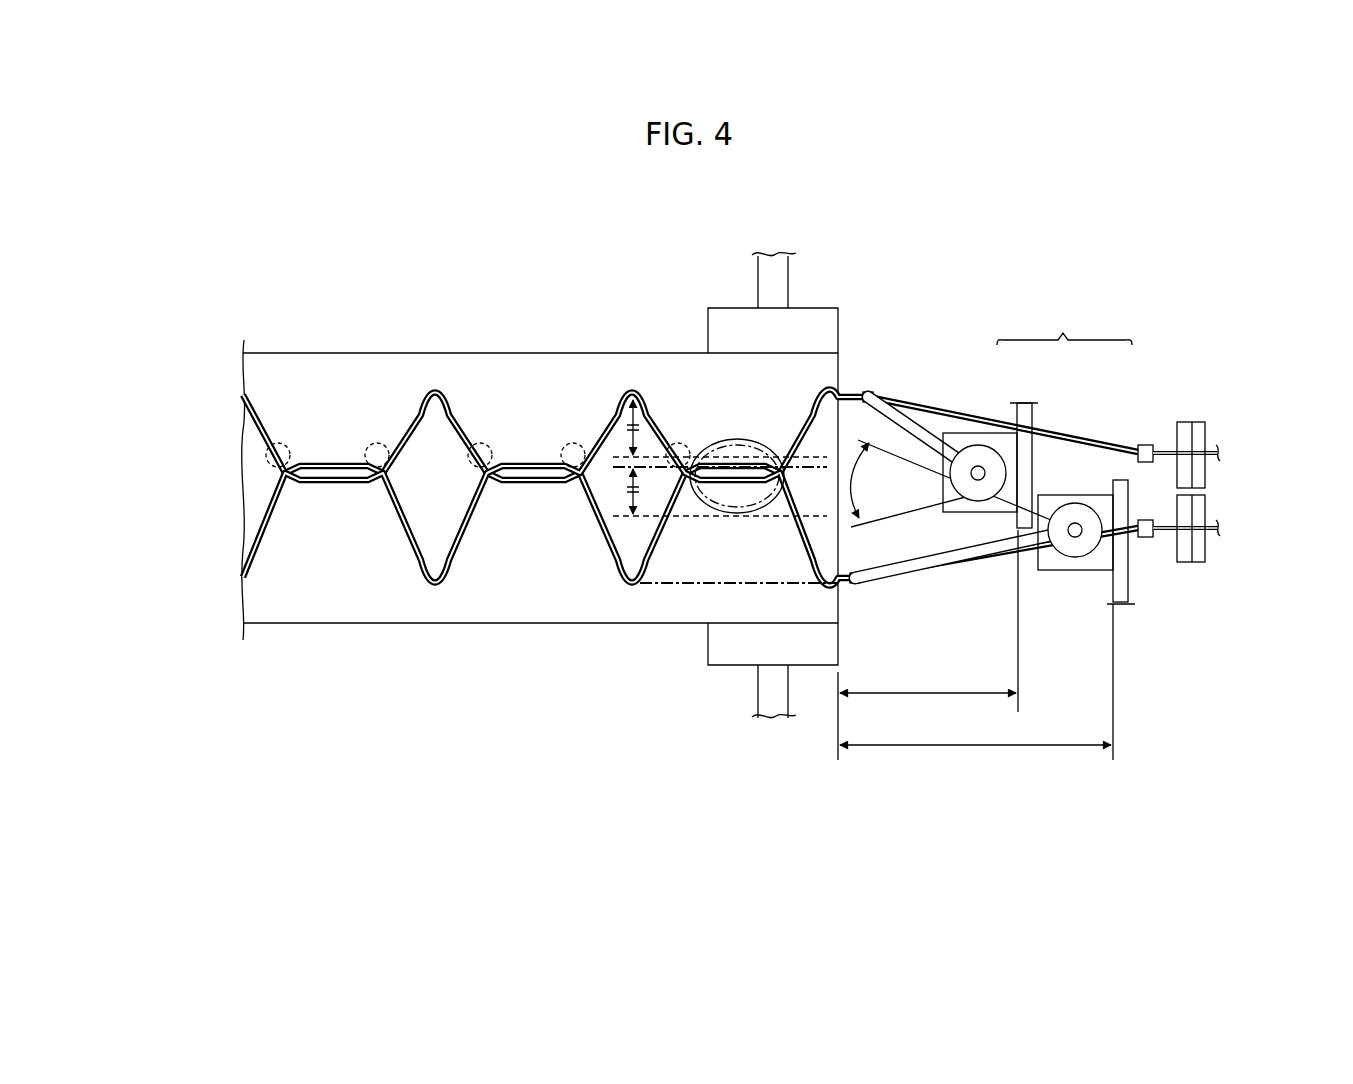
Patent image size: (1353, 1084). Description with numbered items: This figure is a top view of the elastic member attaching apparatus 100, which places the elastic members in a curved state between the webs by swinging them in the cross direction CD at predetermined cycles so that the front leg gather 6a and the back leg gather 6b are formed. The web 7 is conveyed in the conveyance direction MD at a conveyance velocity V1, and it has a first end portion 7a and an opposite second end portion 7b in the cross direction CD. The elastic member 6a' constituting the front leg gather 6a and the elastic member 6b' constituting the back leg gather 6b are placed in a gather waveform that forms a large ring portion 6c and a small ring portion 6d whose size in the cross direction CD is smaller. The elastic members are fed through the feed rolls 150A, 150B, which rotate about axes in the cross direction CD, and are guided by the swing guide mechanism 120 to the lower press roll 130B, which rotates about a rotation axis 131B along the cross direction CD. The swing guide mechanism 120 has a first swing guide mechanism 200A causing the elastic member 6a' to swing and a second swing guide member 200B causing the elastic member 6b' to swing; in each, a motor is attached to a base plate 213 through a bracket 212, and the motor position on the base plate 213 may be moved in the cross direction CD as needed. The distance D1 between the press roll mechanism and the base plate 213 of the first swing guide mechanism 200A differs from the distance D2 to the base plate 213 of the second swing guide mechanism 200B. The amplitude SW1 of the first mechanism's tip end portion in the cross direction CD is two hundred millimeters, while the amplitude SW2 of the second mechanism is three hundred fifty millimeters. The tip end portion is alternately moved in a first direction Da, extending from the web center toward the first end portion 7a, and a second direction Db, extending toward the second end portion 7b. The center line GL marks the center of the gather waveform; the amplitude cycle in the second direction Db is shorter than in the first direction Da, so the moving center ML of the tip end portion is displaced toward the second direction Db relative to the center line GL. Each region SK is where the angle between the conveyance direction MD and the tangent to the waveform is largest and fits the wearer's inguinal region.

The web 7 is at (370, 365).
The first end portion 7a is at (333, 350).
The second end portion 7b is at (375, 626).
The front leg gather 6a is at (690, 446).
The back leg gather 6b is at (690, 530).
The large ring portion 6c is at (455, 390).
The small ring portion 6d is at (312, 457).
The elastic member 6a' is at (1193, 429).
The elastic member 6b' is at (1193, 503).
The region SK is at (283, 488).
The center line GL is at (618, 456).
The moving center ML is at (803, 462).
The amplitude SW1 is at (845, 480).
The amplitude SW2 is at (845, 480).
The elastic member attaching apparatus 100 is at (1142, 357).
The swing guide mechanism 120 is at (1064, 322).
The first swing guide mechanism 200A is at (983, 440).
The second swing guide member 200B is at (1097, 505).
The bracket 212 is at (969, 438).
The base plate 213 is at (1026, 463).
The feed roll 150A is at (1180, 565).
The feed roll 150B is at (1217, 562).
The lower press roll 130B is at (722, 653).
The rotation axis 131B is at (773, 703).
The distance D1 is at (928, 679).
The distance D2 is at (975, 731).
The conveyance velocity V1 is at (494, 643).
The conveyance direction MD is at (610, 808).
The cross direction CD is at (150, 462).
The first direction Da is at (200, 337).
The second direction Db is at (205, 563).